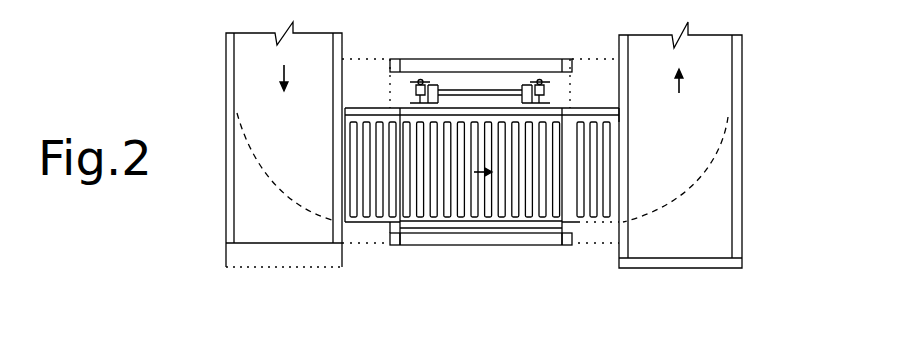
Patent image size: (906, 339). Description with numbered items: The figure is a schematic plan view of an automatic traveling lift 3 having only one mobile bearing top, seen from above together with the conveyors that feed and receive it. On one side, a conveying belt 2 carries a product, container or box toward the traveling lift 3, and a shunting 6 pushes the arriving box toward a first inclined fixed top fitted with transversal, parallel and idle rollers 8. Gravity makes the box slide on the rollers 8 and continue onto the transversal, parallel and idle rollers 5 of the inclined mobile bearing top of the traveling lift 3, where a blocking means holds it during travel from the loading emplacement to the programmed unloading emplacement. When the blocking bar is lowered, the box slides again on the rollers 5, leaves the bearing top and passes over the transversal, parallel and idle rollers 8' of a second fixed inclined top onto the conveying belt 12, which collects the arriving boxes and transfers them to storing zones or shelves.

The conveying belt 2 is at (252, 68).
The conveying belt 12 is at (698, 143).
The traveling lift 3 is at (497, 64).
The idle rollers 5 is at (487, 203).
The shunting 6 is at (265, 183).
The idle rollers 8 is at (373, 217).
The idle rollers 8' is at (591, 217).